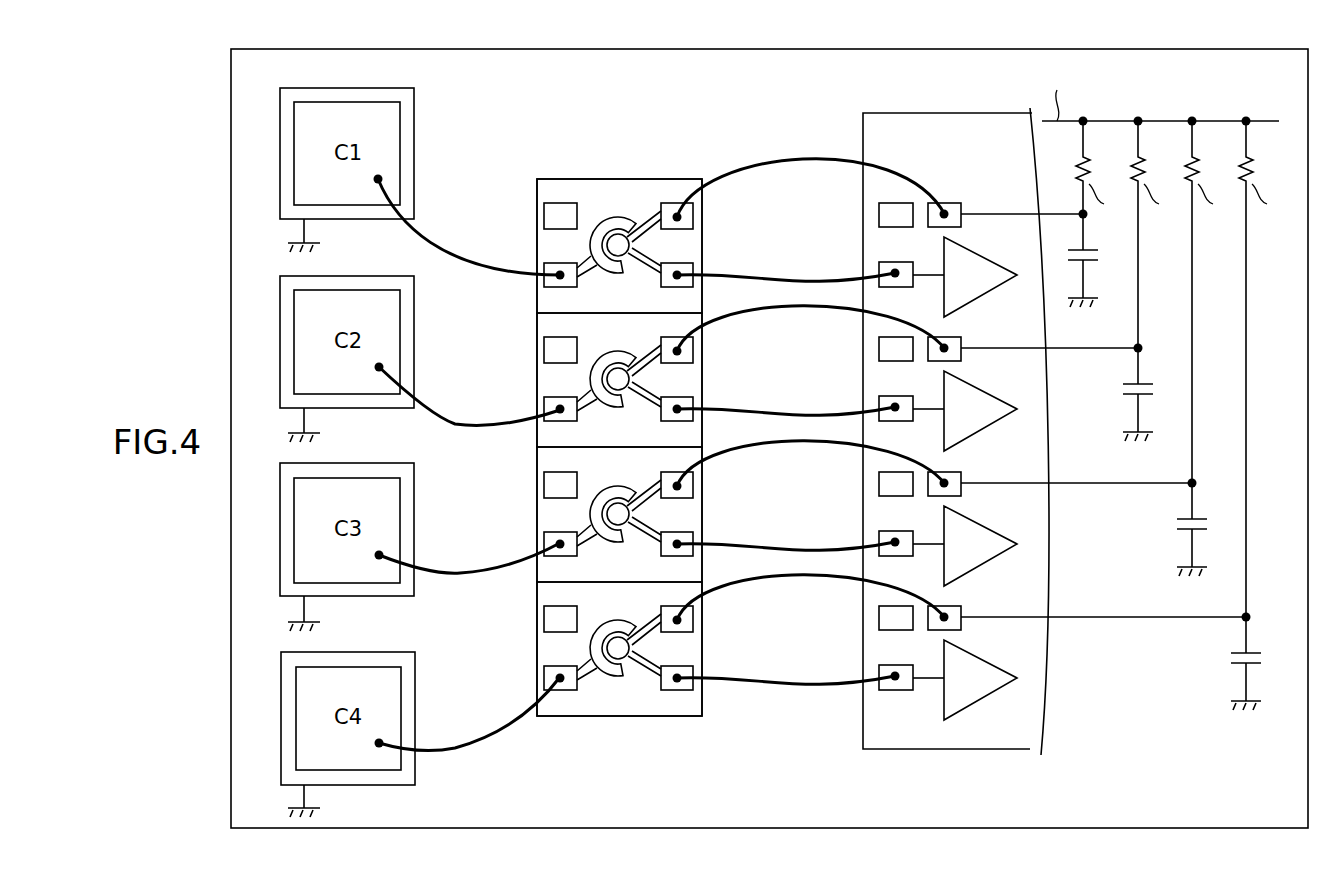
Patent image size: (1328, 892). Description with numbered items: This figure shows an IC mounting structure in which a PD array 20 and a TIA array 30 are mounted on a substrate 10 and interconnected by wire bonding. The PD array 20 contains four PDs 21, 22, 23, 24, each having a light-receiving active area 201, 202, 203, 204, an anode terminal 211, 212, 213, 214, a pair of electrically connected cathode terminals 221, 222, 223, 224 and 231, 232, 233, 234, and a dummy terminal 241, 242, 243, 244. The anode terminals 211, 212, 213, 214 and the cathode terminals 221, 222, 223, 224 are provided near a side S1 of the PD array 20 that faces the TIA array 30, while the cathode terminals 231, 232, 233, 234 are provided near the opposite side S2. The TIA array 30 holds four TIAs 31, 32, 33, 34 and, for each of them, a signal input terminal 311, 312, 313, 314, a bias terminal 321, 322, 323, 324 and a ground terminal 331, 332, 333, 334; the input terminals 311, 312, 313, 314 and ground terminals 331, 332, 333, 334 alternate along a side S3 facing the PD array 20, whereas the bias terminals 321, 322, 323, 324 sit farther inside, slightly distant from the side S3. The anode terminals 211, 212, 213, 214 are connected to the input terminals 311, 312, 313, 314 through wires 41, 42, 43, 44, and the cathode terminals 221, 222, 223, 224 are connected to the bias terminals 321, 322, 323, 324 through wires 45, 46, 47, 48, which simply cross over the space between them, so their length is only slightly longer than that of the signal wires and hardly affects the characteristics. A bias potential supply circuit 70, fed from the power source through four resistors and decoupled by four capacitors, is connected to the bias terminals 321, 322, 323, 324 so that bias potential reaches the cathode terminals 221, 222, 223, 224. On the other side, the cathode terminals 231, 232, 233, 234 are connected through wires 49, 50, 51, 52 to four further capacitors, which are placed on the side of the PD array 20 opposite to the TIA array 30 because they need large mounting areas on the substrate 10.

The substrate 10 is at (231, 143).
The PD array 20 is at (641, 727).
The PD 21 is at (628, 179).
The PD 22 is at (703, 370).
The PD 23 is at (703, 505).
The PD 24 is at (703, 639).
The TIA array 30 is at (982, 749).
The TIA 31 is at (985, 255).
The TIA 32 is at (985, 389).
The TIA 33 is at (985, 524).
The TIA 34 is at (985, 658).
The wire 41 is at (797, 277).
The wire 42 is at (797, 411).
The wire 43 is at (797, 546).
The wire 44 is at (797, 680).
The wire 45 is at (797, 159).
The wire 46 is at (797, 309).
The wire 47 is at (797, 444).
The wire 48 is at (797, 578).
The wire 49 is at (410, 241).
The wire 50 is at (447, 426).
The wire 51 is at (436, 569).
The wire 52 is at (455, 750).
The bias potential supply circuit 70 is at (1162, 100).
The active area 201 is at (622, 245).
The active area 202 is at (622, 379).
The active area 203 is at (622, 514).
The active area 204 is at (622, 648).
The anode terminal 211 is at (693, 287).
The anode terminal 212 is at (693, 421).
The anode terminal 213 is at (693, 556).
The anode terminal 214 is at (693, 690).
The cathode terminal 221 is at (693, 203).
The cathode terminal 222 is at (693, 337).
The cathode terminal 223 is at (693, 472).
The cathode terminal 224 is at (693, 606).
The cathode terminal 231 is at (556, 263).
The cathode terminal 232 is at (556, 397).
The cathode terminal 233 is at (556, 532).
The cathode terminal 234 is at (556, 666).
The terminal 241 is at (556, 203).
The terminal 242 is at (556, 337).
The terminal 243 is at (556, 472).
The terminal 244 is at (556, 606).
The input terminal 311 is at (882, 263).
The input terminal 312 is at (882, 397).
The input terminal 313 is at (882, 532).
The input terminal 314 is at (882, 666).
The bias terminal 321 is at (958, 203).
The bias terminal 322 is at (958, 337).
The bias terminal 323 is at (958, 472).
The bias terminal 324 is at (958, 606).
The ground terminal 331 is at (882, 204).
The ground terminal 332 is at (882, 338).
The ground terminal 333 is at (882, 473).
The ground terminal 334 is at (882, 607).
The side S1 is at (703, 236).
The side S2 is at (537, 222).
The side S3 is at (863, 135).